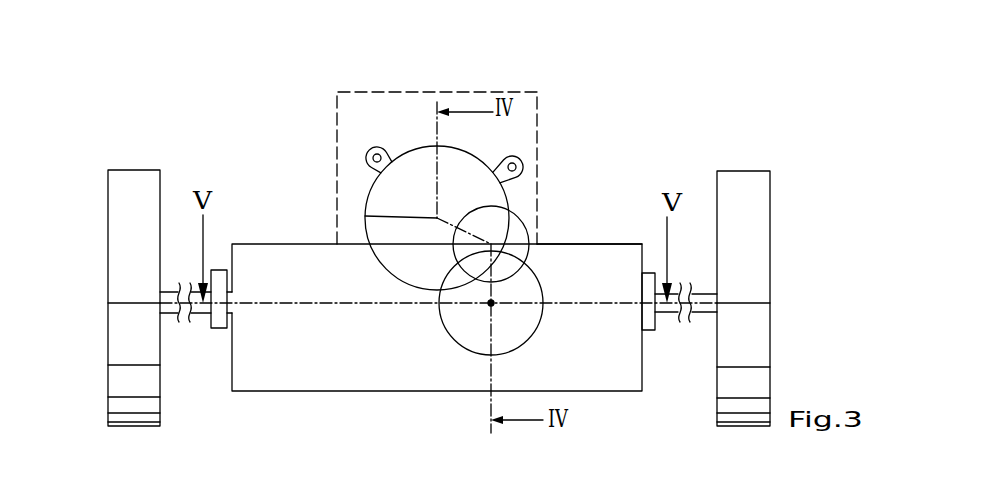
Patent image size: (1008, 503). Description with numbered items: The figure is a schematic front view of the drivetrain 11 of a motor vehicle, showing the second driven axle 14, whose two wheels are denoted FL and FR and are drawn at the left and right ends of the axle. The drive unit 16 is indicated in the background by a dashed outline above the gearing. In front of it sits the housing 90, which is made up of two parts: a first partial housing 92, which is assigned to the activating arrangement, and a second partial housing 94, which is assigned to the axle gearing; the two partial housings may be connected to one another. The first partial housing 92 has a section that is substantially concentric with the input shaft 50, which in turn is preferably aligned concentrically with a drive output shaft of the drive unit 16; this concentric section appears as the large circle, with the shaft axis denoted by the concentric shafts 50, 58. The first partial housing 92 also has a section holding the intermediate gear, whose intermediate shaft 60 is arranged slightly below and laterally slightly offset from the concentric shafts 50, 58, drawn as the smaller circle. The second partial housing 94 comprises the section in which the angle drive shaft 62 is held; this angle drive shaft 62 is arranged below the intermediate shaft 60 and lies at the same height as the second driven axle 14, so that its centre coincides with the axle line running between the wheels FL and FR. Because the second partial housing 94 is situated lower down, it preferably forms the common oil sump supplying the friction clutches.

The drivetrain 11 is at (653, 85).
The second driven axle 14 is at (270, 303).
The drive unit 16 is at (362, 91).
The input shaft 50 is at (362, 178).
The concentric shaft 58 is at (365, 216).
The intermediate shaft 60 is at (491, 244).
The angle drive shaft 62 is at (491, 303).
The housing 90 is at (580, 235).
The first partial housing 92 is at (487, 158).
The second partial housing 94 is at (552, 244).
The front right wheel FR is at (132, 170).
The front left wheel FL is at (740, 172).